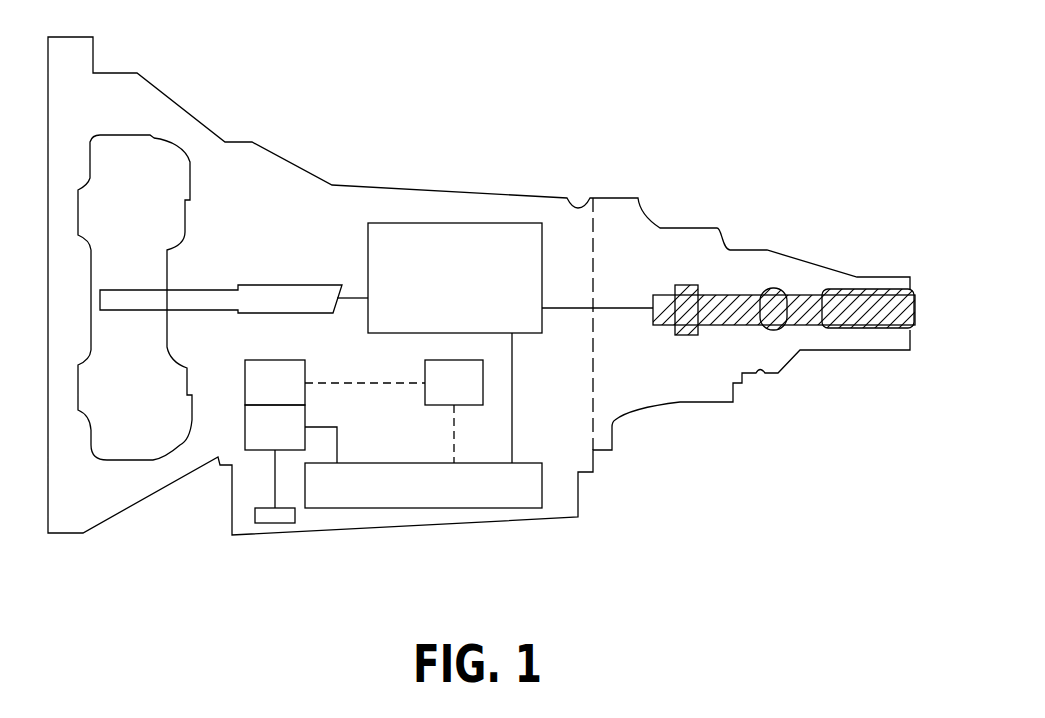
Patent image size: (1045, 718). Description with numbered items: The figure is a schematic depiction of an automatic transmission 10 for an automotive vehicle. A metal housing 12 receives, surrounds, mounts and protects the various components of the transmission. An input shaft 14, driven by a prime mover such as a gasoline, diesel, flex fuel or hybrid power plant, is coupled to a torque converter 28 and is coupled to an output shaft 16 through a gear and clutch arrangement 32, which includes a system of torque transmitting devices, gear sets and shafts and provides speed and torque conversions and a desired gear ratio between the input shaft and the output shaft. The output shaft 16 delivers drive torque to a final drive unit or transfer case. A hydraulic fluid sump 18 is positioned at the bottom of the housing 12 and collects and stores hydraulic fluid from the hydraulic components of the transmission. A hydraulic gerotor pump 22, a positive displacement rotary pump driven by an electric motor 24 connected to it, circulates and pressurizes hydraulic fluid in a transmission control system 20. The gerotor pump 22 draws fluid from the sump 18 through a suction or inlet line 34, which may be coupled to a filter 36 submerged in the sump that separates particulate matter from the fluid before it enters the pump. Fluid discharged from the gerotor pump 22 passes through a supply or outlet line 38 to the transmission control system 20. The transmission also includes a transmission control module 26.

The automatic transmission 10 is at (690, 138).
The housing 12 is at (395, 187).
The input shaft 14 is at (110, 290).
The output shaft 16 is at (800, 295).
The hydraulic fluid sump 18 is at (390, 525).
The transmission control system 20 is at (412, 500).
The hydraulic gerotor pump 22 is at (265, 443).
The electric motor 24 is at (265, 398).
The transmission control module 26 is at (444, 398).
The torque converter 28 is at (127, 133).
The gear and clutch arrangement 32 is at (443, 292).
The inlet line 34 is at (273, 483).
The filter 36 is at (272, 524).
The outlet line 38 is at (338, 443).